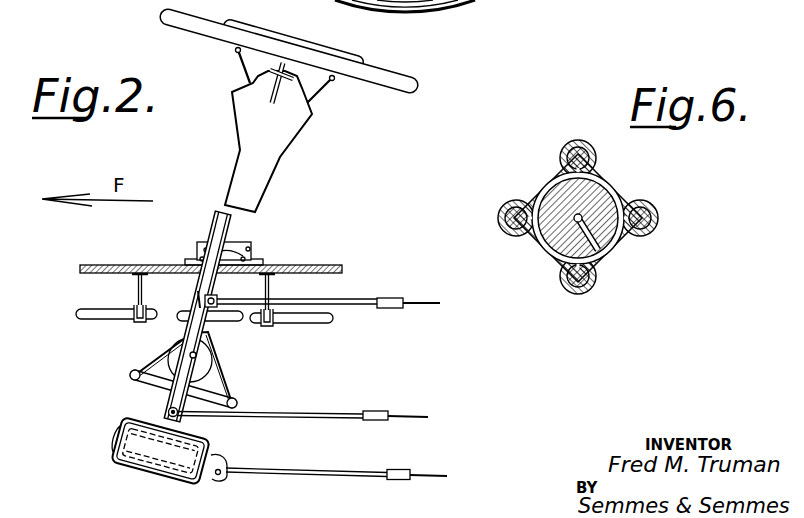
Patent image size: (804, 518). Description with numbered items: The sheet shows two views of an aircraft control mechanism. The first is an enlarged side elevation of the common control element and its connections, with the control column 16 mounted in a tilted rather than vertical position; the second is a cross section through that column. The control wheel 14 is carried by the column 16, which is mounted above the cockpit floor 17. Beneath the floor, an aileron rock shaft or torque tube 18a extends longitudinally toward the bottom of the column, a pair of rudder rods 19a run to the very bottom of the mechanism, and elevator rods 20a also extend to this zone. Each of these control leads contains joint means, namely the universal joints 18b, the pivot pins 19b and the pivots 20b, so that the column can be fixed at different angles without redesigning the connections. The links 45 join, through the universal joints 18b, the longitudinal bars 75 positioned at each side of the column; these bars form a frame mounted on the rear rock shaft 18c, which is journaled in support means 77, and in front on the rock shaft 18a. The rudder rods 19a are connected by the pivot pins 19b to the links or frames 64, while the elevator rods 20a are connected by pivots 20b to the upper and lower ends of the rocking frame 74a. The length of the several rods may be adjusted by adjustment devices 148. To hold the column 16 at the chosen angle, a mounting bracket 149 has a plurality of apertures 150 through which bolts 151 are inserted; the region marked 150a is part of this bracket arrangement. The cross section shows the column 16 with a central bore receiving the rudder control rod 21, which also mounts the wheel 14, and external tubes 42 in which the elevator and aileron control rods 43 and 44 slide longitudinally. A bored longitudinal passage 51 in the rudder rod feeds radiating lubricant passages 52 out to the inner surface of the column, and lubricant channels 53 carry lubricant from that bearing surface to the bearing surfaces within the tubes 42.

In FIG. 2, the control wheel 14 is at (375, 82).
In FIG. 2, the control column 16 is at (239, 172).
In FIG. 6, the control column 16 is at (610, 176).
In FIG. 2, the floor 17 is at (116, 265).
In FIG. 2, the aileron rock shaft 18a is at (116, 321).
In FIG. 2, the universal joint 18b is at (214, 323).
In FIG. 2, the rock shaft 18c is at (316, 323).
In FIG. 2, the rudder rod 19a is at (303, 477).
In FIG. 2, the pivot pin 19b is at (230, 465).
In FIG. 2, the elevator control rod 20a is at (405, 308).
In FIG. 2, the pivot 20b is at (218, 298).
In FIG. 6, the rudder control rod 21 is at (620, 245).
In FIG. 6, the tube 42 is at (562, 153).
In FIG. 6, the elevator control rod 43 is at (503, 218).
In FIG. 6, the aileron control rod 44 is at (593, 151).
In FIG. 2, the link 45 is at (207, 281).
In FIG. 6, the bored longitudinal passage 51 is at (598, 252).
In FIG. 6, the radiating lubricant passage 52 is at (538, 242).
In FIG. 6, the lubricant channel 53 is at (628, 203).
In FIG. 2, the link or frame 64 is at (113, 436).
In FIG. 2, the rocking frame 74a is at (221, 365).
In FIG. 2, the longitudinal bar 75 is at (193, 298).
In FIG. 2, the support means 77 is at (270, 294).
In FIG. 2, the adjustment device 148 is at (386, 298).
In FIG. 2, the mounting bracket 149 is at (262, 257).
In FIG. 2, the aperture 150 is at (200, 248).
In FIG. 2, the carriage arm 150a is at (248, 250).
In FIG. 2, the bolt 151 is at (206, 248).